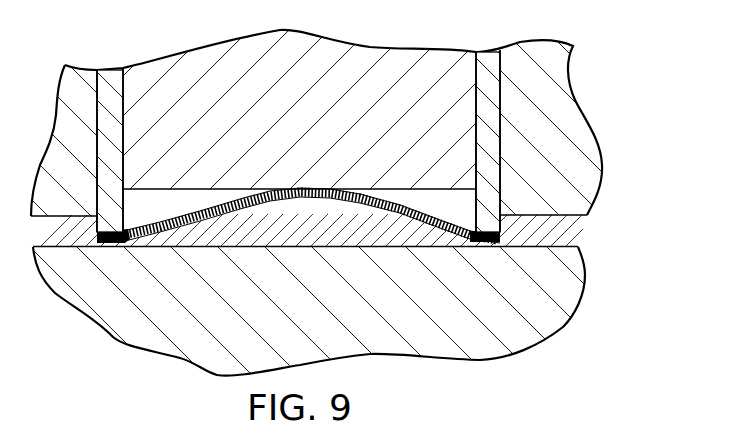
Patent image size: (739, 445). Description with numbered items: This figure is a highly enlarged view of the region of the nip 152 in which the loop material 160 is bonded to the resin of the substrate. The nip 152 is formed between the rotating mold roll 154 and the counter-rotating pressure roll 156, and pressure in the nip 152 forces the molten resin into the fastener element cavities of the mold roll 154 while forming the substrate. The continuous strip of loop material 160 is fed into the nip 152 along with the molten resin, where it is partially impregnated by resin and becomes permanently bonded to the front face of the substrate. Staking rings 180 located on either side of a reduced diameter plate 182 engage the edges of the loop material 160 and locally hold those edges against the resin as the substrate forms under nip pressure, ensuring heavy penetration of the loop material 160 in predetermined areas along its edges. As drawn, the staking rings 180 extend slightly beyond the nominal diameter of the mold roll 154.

The nip 152 is at (590, 228).
The mold roll 154 is at (585, 104).
The pressure roll 156 is at (570, 297).
The loop material 160 is at (203, 198).
The staking rings 180 is at (118, 67).
The reduced diameter plate 182 is at (341, 47).